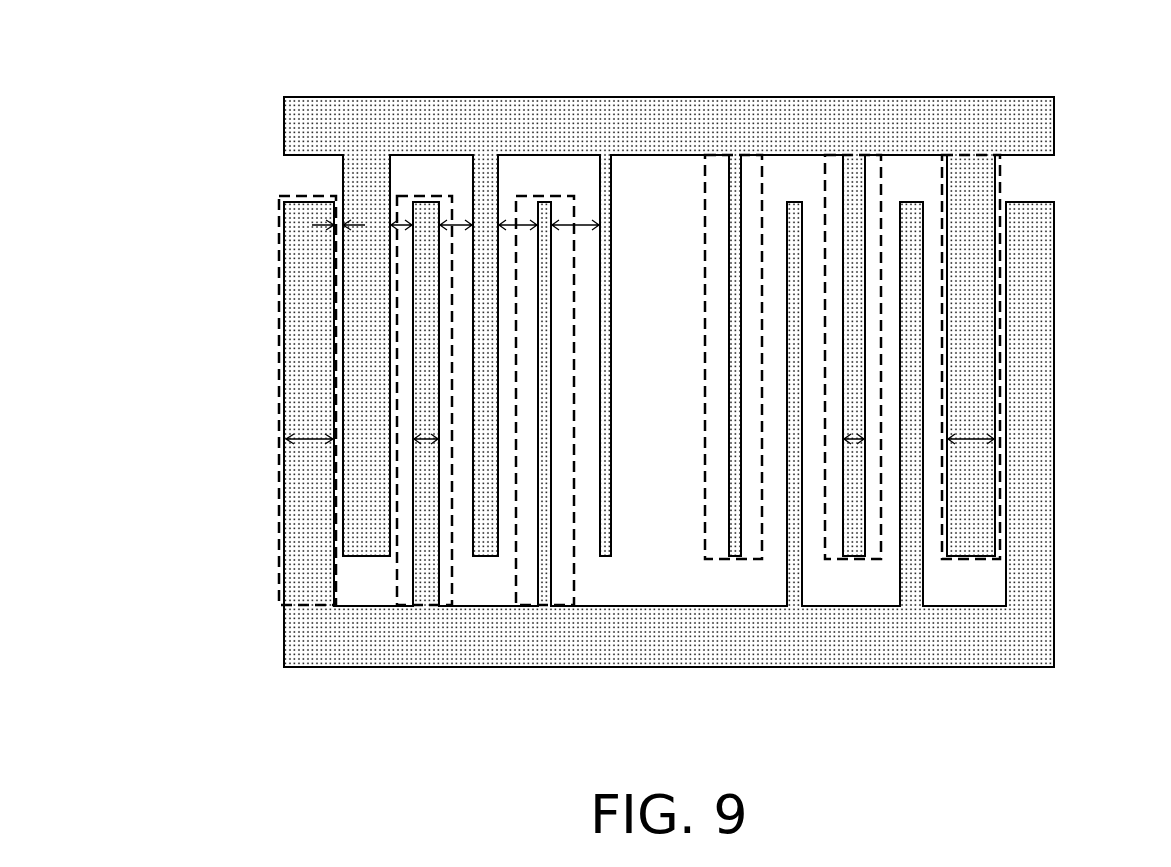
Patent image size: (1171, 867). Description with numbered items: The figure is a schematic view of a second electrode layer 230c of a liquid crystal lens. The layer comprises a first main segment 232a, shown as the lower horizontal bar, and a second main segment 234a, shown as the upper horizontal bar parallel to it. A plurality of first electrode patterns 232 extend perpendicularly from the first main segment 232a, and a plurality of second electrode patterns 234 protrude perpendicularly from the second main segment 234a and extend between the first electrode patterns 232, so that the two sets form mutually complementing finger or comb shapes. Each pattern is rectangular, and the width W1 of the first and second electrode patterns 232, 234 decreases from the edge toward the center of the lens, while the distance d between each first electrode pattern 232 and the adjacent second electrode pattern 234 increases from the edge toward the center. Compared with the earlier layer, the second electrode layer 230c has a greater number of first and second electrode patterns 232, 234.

The second electrode layer 230c is at (1050, 753).
The first electrode patterns 232 is at (333, 585).
The first main segment 232a is at (675, 638).
The second electrode patterns 234 is at (960, 158).
The second main segment 234a is at (740, 97).
The distance d is at (568, 223).
The width W1 is at (427, 435).